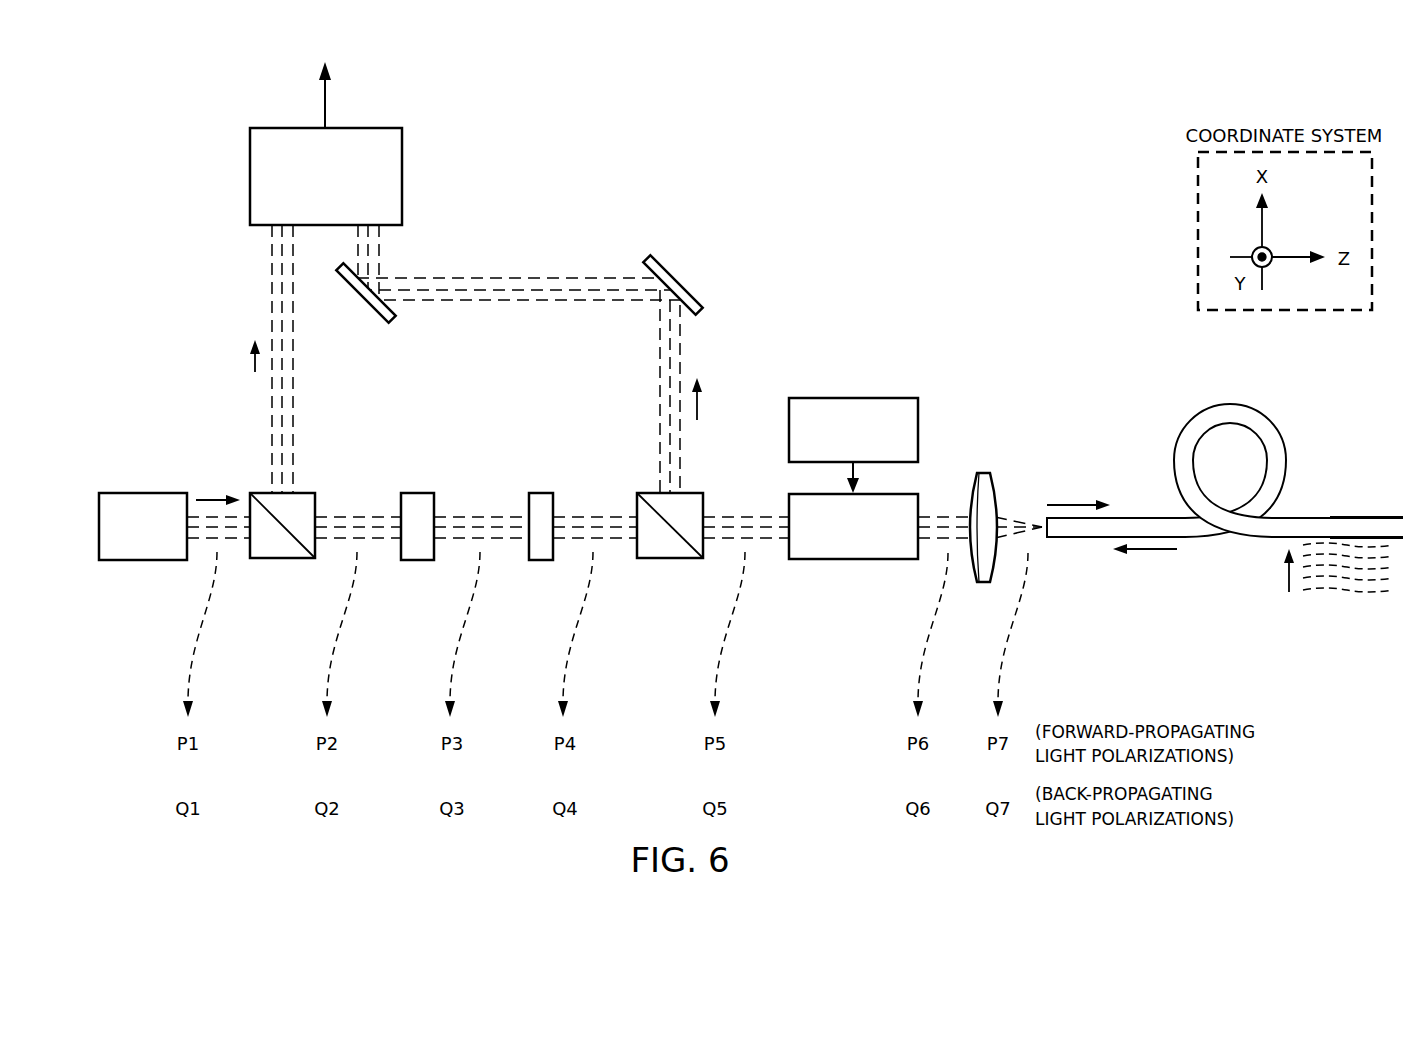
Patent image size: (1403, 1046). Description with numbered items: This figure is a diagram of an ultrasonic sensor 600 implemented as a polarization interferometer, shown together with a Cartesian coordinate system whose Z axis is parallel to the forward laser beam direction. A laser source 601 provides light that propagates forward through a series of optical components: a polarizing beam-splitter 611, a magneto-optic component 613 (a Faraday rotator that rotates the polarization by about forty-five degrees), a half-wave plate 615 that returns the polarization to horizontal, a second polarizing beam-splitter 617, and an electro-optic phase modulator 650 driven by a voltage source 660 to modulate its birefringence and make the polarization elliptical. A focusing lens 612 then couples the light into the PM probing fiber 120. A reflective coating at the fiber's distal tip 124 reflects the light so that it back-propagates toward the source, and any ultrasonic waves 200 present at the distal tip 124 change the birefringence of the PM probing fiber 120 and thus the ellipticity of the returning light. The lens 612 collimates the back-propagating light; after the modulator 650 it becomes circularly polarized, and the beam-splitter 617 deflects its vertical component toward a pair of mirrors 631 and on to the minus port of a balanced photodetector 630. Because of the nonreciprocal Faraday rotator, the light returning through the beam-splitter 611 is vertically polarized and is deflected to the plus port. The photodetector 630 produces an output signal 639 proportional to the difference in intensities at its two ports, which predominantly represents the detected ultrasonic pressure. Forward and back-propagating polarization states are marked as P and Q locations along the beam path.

The ultrasonic sensor 600 is at (922, 218).
The laser source 601 is at (143, 493).
The polarizing beam-splitter 611 is at (278, 559).
The focusing lens 612 is at (985, 473).
The magneto-optic component 613 is at (412, 493).
The half-wave plate 615 is at (544, 493).
The polarizing beam-splitter 617 is at (665, 559).
The balanced photodetector 630 is at (250, 178).
The mirrors 631 is at (689, 288).
The output signal 639 is at (325, 102).
The electro-optic phase modulator 650 is at (873, 559).
The voltage source 660 is at (874, 398).
The PM probing fiber 120 is at (1230, 406).
The distal tip 124 is at (1390, 494).
The ultrasonic waves 200 is at (1350, 612).